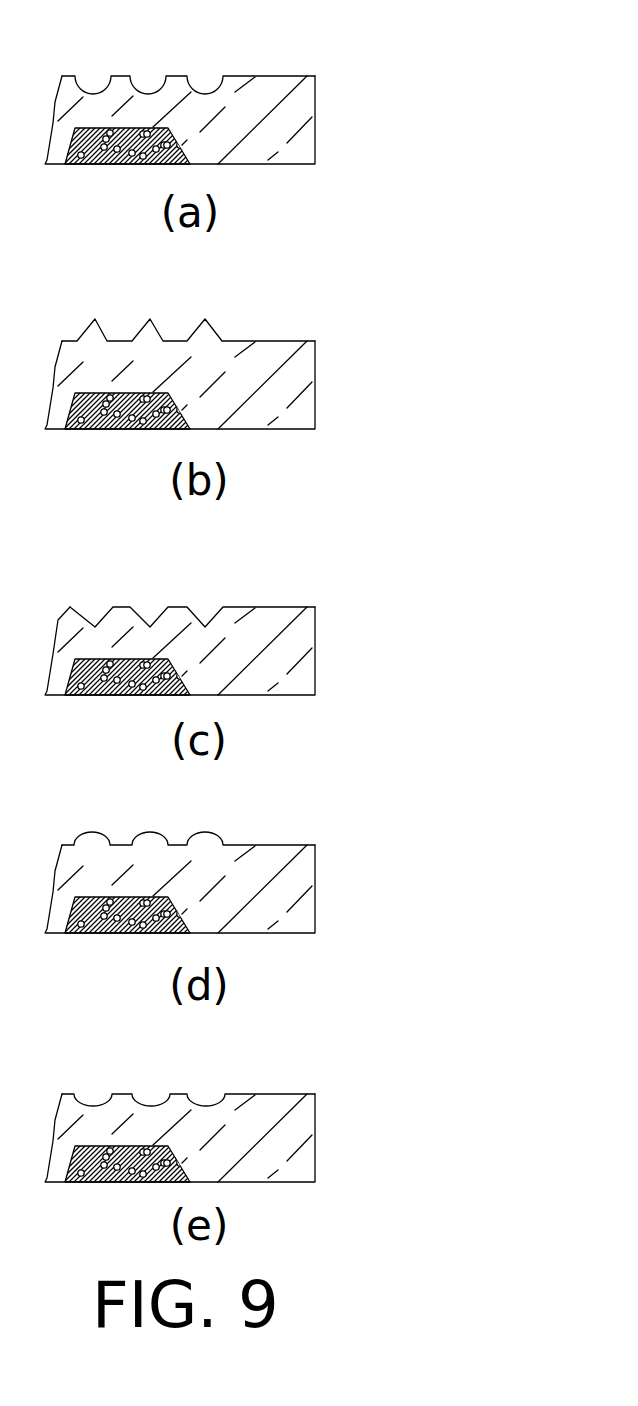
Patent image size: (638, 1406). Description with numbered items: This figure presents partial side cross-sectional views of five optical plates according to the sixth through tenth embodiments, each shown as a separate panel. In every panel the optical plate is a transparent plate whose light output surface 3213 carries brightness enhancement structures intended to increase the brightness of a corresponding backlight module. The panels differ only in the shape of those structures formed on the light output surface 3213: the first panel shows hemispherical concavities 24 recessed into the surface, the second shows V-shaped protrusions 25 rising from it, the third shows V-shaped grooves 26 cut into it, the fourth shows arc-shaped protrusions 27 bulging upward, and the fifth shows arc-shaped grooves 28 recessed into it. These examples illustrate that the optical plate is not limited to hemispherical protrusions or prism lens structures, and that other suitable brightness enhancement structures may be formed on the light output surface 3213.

The hemispherical concavities 24 is at (206, 6).
The V-shaped protrusions 25 is at (190, 295).
The V-shaped grooves 26 is at (194, 570).
The arc-shaped protrusions 27 is at (190, 800).
The arc-shaped grooves 28 is at (190, 1054).
The light output surface 3213 is at (283, 0).